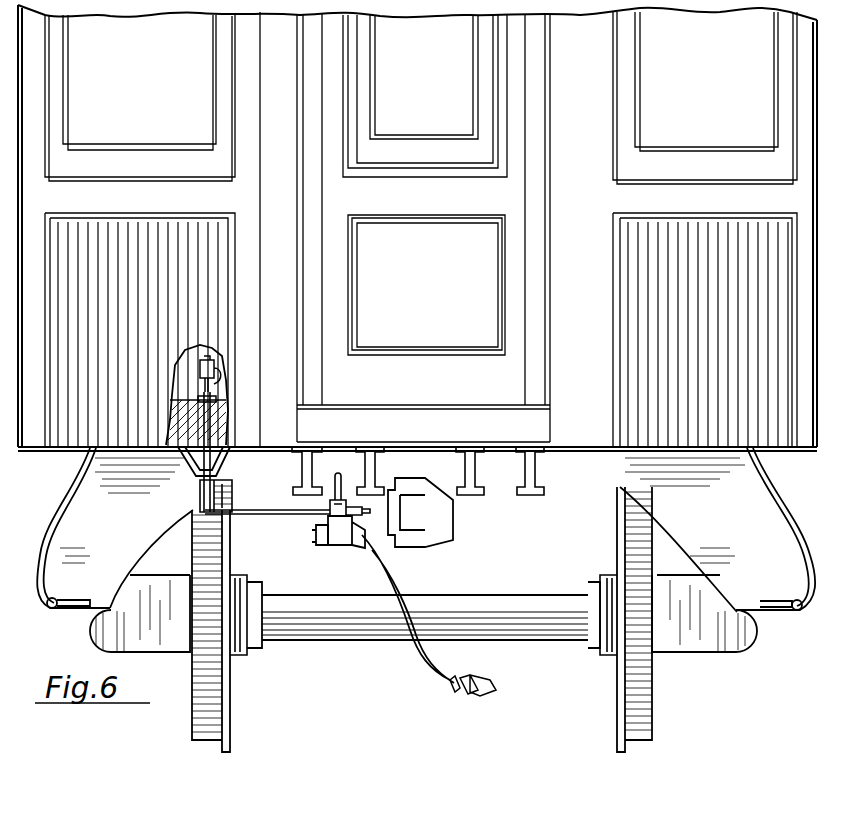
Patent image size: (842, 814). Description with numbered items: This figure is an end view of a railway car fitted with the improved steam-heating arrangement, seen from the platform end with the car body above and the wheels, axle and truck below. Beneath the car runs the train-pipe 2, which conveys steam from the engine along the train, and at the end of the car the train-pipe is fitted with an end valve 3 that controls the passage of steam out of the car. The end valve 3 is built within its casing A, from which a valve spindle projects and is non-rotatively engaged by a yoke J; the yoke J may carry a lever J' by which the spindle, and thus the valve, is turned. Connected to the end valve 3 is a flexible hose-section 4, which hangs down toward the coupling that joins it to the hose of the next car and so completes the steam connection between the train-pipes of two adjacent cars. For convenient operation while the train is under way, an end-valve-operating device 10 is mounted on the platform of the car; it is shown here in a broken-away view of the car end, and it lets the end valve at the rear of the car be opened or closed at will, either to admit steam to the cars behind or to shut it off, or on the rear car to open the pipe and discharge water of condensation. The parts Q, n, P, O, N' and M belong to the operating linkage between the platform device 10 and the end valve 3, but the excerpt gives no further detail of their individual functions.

The valve Q is at (215, 365).
The end-valve-operating device 10 is at (197, 395).
The collar n is at (216, 398).
The rod P is at (222, 398).
The funnel bracket O is at (230, 461).
The hanger N' is at (213, 524).
The operating rod M is at (277, 515).
The end valve 3 is at (322, 524).
The yoke J is at (305, 543).
The connection J' is at (362, 510).
The casing A is at (343, 530).
The train-pipe 2 is at (337, 476).
The flexible hose-section 4 is at (428, 668).